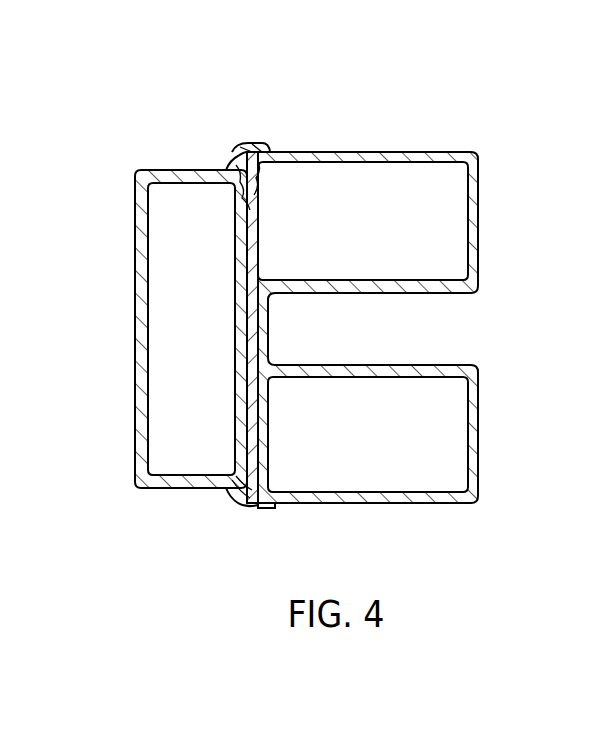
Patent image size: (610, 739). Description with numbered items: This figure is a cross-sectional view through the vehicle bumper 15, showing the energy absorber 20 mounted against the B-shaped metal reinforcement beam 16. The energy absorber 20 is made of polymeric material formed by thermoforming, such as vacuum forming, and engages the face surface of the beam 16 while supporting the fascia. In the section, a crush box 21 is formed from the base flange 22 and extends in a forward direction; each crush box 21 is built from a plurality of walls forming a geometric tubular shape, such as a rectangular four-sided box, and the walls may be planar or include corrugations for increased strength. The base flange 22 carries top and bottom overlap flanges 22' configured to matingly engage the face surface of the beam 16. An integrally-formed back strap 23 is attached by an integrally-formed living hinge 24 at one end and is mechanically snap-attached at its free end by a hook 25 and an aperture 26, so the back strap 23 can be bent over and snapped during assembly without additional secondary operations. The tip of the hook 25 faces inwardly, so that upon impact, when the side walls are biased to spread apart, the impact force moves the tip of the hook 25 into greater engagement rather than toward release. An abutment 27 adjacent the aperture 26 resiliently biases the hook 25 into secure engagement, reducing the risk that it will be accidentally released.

The vehicle bumper 15 is at (195, 92).
The reinforcement beam 16 is at (471, 152).
The energy absorber 20 is at (135, 161).
The crush box 21 is at (136, 388).
The base flange 22 is at (240, 353).
The overlap flange 22' is at (275, 316).
The back strap 23 is at (238, 263).
The living hinge 24 is at (212, 477).
The hook 25 is at (258, 190).
The aperture 26 is at (240, 191).
The abutment 27 is at (260, 178).